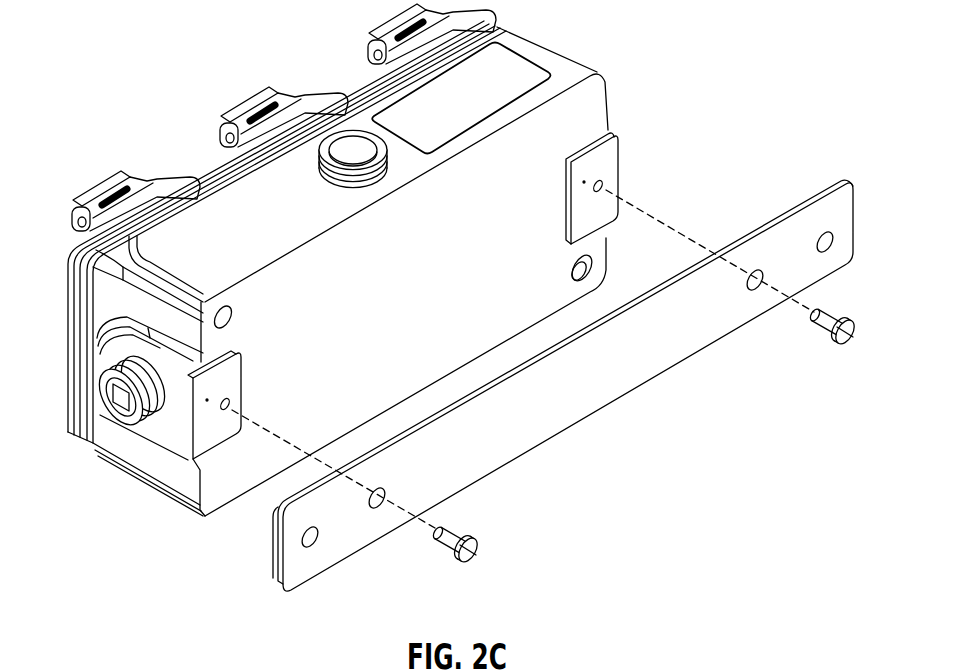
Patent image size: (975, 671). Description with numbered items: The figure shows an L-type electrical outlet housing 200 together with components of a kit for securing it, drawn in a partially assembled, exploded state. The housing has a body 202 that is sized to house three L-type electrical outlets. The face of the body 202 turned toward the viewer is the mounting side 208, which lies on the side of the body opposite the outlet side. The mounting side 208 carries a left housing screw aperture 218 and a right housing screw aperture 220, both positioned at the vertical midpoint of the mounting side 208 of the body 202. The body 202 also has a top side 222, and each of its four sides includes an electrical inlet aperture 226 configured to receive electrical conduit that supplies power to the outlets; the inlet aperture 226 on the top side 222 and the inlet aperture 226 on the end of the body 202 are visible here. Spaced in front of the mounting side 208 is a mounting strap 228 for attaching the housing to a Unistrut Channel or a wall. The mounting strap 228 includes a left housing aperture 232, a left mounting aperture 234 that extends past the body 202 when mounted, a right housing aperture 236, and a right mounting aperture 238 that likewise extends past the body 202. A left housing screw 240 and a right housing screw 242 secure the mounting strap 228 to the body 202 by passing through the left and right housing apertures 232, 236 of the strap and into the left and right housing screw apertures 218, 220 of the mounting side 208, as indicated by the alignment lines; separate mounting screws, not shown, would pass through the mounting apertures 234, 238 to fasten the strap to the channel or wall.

The L-type electrical outlet housing 200 is at (160, 50).
The body 202 is at (353, 260).
The mounting side 208 is at (414, 284).
The left housing screw aperture 218 is at (229, 404).
The right housing screw aperture 220 is at (604, 187).
The top side 222 is at (239, 218).
The electrical inlet aperture 226 is at (351, 148).
The mounting strap 228 is at (589, 415).
The left housing aperture 232 is at (397, 510).
The left mounting aperture 234 is at (320, 562).
The right housing aperture 236 is at (767, 284).
The right mounting aperture 238 is at (836, 238).
The left housing screw 240 is at (458, 536).
The right housing screw 242 is at (824, 314).